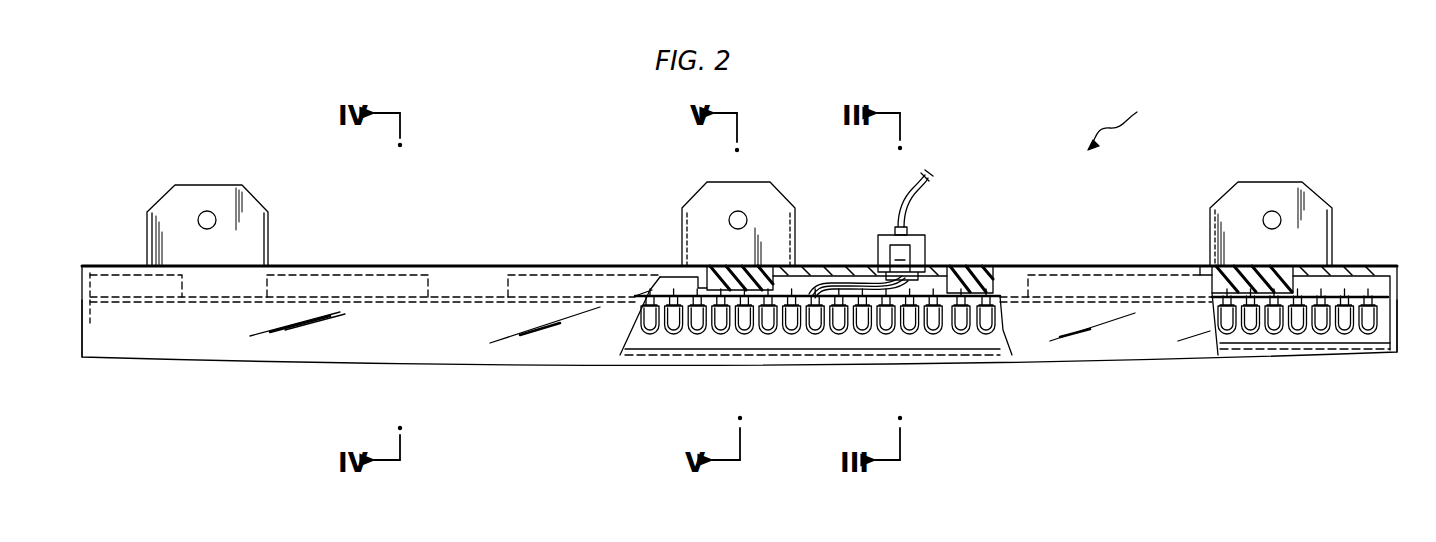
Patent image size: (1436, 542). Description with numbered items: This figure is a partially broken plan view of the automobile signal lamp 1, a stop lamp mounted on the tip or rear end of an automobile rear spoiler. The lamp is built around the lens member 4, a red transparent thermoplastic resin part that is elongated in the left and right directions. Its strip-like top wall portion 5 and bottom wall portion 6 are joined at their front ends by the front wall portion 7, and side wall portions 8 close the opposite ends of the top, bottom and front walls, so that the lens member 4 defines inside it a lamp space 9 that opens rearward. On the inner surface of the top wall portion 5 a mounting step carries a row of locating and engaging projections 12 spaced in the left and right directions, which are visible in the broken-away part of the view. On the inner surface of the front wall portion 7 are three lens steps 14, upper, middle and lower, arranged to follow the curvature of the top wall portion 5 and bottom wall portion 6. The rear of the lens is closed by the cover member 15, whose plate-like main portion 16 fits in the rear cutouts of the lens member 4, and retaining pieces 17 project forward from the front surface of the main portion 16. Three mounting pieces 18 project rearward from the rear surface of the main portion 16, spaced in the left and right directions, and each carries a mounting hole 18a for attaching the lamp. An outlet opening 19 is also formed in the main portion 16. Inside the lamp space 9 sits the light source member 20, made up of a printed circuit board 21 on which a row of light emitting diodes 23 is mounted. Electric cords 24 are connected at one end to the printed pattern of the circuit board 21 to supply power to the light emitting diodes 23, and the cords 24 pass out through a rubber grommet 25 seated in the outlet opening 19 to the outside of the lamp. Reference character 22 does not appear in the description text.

The signal lamp 1 is at (1166, 114).
The lens member 4 is at (632, 366).
The top wall portion 5 is at (560, 360).
The bottom wall portion 6 is at (1000, 366).
The front wall portion 7 is at (742, 366).
The side wall portion 8 is at (82, 325).
The lamp space 9 is at (782, 366).
The locating and engaging projection 12 is at (222, 298).
The lens step 14 is at (830, 366).
The cover member 15 is at (812, 265).
The main portion 16 is at (830, 265).
The retaining piece 17 is at (267, 290).
The mounting piece 18 is at (270, 225).
The mounting hole 18a is at (207, 211).
The outlet opening 19 is at (918, 258).
The light source member 20 is at (1007, 427).
The printed circuit board 21 is at (945, 366).
The lead wire 22 is at (410, 297).
The light emitting diode 23 is at (700, 366).
The electric cord 24 is at (856, 283).
The rubber grommet 25 is at (892, 238).